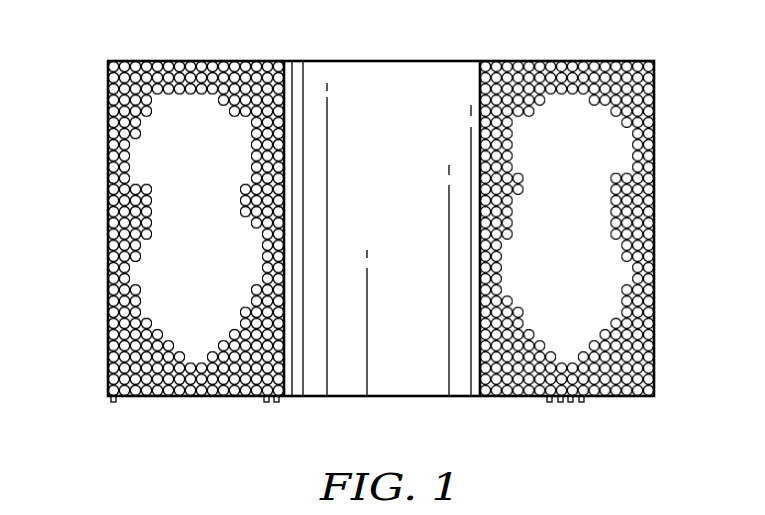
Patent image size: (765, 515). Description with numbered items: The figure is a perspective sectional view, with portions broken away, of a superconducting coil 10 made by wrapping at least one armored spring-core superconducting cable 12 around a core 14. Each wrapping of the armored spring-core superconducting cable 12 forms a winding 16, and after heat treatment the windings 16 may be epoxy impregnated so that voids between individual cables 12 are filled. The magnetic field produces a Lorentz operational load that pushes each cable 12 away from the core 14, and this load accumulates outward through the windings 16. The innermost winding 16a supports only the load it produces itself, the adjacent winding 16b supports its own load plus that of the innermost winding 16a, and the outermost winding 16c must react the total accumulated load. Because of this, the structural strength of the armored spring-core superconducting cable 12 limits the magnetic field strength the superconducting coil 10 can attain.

The superconducting coil 10 is at (76, 129).
The armored spring-core superconducting cable 12 is at (137, 130).
The core 14 is at (380, 74).
The winding 16 is at (549, 402).
The innermost winding 16a is at (276, 402).
The winding adjacent the innermost winding 16b is at (266, 402).
The outermost winding 16c is at (113, 402).